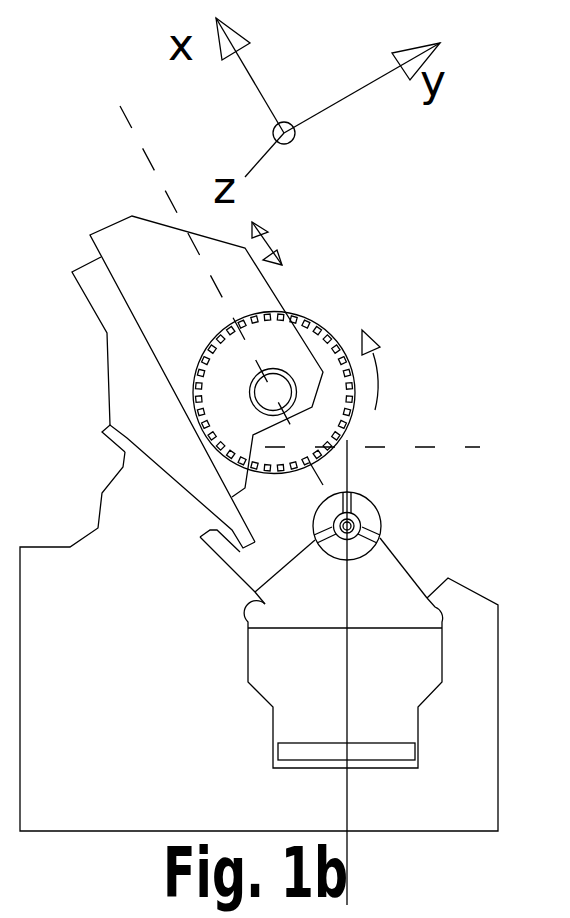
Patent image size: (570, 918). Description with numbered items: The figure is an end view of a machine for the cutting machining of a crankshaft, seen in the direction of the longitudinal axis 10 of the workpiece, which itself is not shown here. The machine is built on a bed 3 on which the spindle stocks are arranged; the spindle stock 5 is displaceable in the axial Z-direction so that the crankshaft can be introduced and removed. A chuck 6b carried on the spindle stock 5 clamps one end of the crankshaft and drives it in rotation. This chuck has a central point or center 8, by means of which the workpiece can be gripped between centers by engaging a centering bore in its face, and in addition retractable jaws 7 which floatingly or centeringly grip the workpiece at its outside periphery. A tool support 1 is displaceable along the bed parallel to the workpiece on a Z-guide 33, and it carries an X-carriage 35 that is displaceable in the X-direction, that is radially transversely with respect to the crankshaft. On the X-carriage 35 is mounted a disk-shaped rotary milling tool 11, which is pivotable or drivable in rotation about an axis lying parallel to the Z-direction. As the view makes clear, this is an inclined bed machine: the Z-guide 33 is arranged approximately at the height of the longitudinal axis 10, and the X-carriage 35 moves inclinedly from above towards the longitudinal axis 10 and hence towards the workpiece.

The tool support 1 is at (206, 379).
The bed 3 is at (259, 672).
The spindle stock 5 is at (360, 553).
The chuck 6b is at (368, 515).
The retractable jaws 7 is at (380, 535).
The center 8 is at (345, 525).
The longitudinal axis 10 is at (410, 470).
The rotary milling tool 11 is at (320, 328).
The Z-guide 33 is at (178, 488).
The X-carriage 35 is at (131, 341).